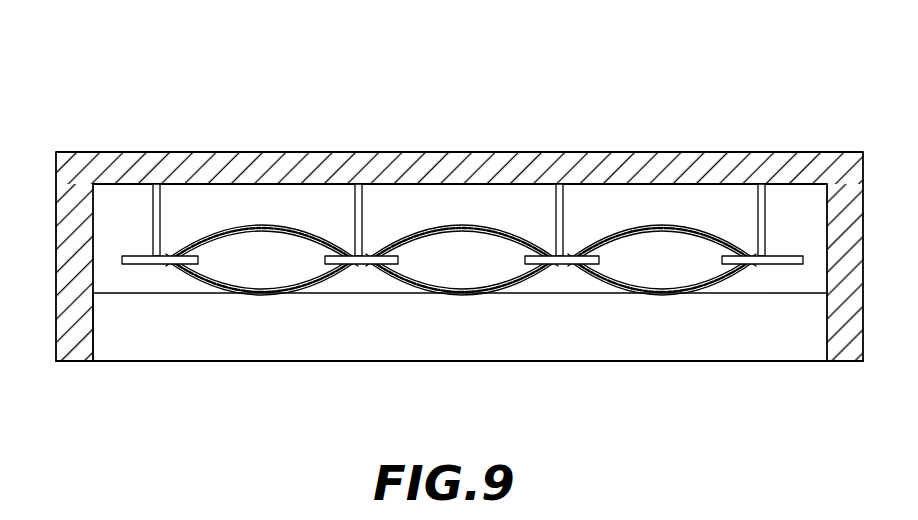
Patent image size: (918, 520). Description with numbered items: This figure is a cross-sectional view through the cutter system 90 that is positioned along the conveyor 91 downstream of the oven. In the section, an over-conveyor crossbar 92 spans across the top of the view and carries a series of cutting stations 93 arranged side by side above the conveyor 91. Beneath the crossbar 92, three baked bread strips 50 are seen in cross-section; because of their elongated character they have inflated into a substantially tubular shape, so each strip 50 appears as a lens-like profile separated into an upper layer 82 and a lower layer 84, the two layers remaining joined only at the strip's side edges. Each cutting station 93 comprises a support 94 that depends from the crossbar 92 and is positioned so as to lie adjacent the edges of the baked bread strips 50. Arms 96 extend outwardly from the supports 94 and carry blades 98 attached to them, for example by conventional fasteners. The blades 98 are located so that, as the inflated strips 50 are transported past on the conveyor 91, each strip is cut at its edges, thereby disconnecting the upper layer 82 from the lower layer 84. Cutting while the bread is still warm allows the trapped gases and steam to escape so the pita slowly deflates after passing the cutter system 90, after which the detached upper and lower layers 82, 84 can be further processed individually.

The cutter system 90 is at (207, 136).
The over-conveyor crossbar 92 is at (316, 157).
The cutting station 93 is at (391, 222).
The dough strip 50 is at (471, 210).
The support 94 is at (355, 220).
The upper layer 82 is at (663, 223).
The blade 98 is at (325, 258).
The arm 96 is at (375, 265).
The conveyor 91 is at (122, 294).
The lower layer 84 is at (653, 294).